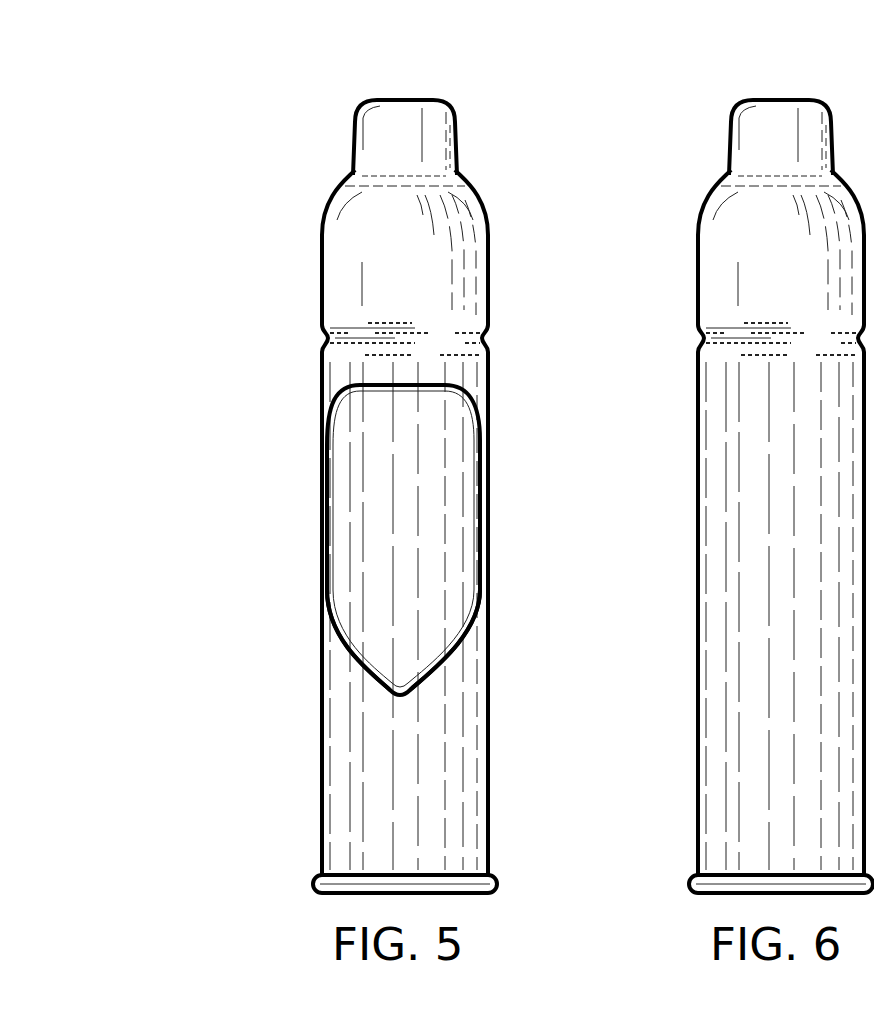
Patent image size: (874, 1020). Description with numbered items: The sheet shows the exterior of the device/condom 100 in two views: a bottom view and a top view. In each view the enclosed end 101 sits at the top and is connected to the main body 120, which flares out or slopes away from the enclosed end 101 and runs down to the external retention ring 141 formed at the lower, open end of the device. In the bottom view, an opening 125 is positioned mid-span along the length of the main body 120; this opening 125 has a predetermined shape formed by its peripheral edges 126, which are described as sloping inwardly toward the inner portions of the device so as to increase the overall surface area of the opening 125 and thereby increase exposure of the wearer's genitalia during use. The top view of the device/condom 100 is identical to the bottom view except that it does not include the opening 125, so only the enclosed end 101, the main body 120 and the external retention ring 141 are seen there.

In FIG. 5, the device/condom 100 is at (218, 243).
In FIG. 6, the device/condom 100 is at (628, 198).
In FIG. 5, the enclosed end 101 is at (375, 148).
In FIG. 6, the enclosed end 101 is at (755, 133).
In FIG. 5, the main body 120 is at (470, 372).
In FIG. 6, the main body 120 is at (765, 537).
In FIG. 5, the opening 125 is at (372, 455).
In FIG. 5, the peripheral edges 126 is at (443, 657).
In FIG. 5, the external retention ring 141 is at (315, 880).
In FIG. 6, the external retention ring 141 is at (692, 880).